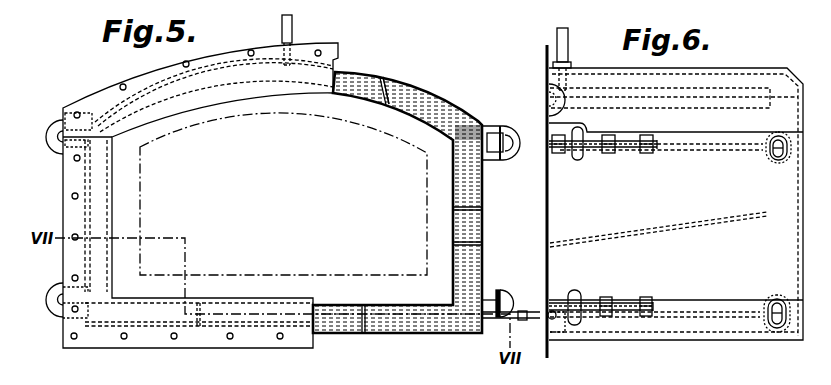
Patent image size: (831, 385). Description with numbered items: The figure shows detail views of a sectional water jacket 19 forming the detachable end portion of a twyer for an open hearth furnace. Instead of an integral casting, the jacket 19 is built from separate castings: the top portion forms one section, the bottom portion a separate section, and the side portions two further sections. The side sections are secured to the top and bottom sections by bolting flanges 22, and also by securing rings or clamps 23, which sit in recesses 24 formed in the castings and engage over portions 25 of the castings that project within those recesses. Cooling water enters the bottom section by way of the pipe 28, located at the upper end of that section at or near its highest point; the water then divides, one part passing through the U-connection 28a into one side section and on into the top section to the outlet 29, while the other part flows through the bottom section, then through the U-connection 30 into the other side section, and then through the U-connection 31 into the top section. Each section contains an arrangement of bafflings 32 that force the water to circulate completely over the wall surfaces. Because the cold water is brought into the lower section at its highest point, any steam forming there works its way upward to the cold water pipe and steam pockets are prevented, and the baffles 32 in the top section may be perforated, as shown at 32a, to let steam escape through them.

In FIG. 5, the water jacket 19 is at (418, 94).
In FIG. 5, the bolting flanges 22 is at (508, 297).
In FIG. 6, the bolting flanges 22 is at (638, 149).
In FIG. 6, the securing rings or clamps 23 is at (778, 161).
In FIG. 6, the recesses 24 is at (767, 153).
In FIG. 6, the projecting portions 25 is at (778, 139).
In FIG. 5, the pipe 28 is at (522, 321).
In FIG. 6, the pipe 28 is at (555, 322).
In FIG. 5, the U-connection 28a is at (493, 296).
In FIG. 6, the U-connection 28a is at (578, 292).
In FIG. 5, the outlet 29 is at (282, 25).
In FIG. 6, the outlet 29 is at (569, 31).
In FIG. 5, the U-connection 30 is at (56, 312).
In FIG. 5, the U-connection 31 is at (55, 152).
In FIG. 5, the bafflings 32 is at (384, 98).
In FIG. 6, the bafflings 32 is at (563, 106).
In FIG. 5, the perforated baffle portion 32a is at (384, 98).
In FIG. 6, the perforated baffle portion 32a is at (549, 95).